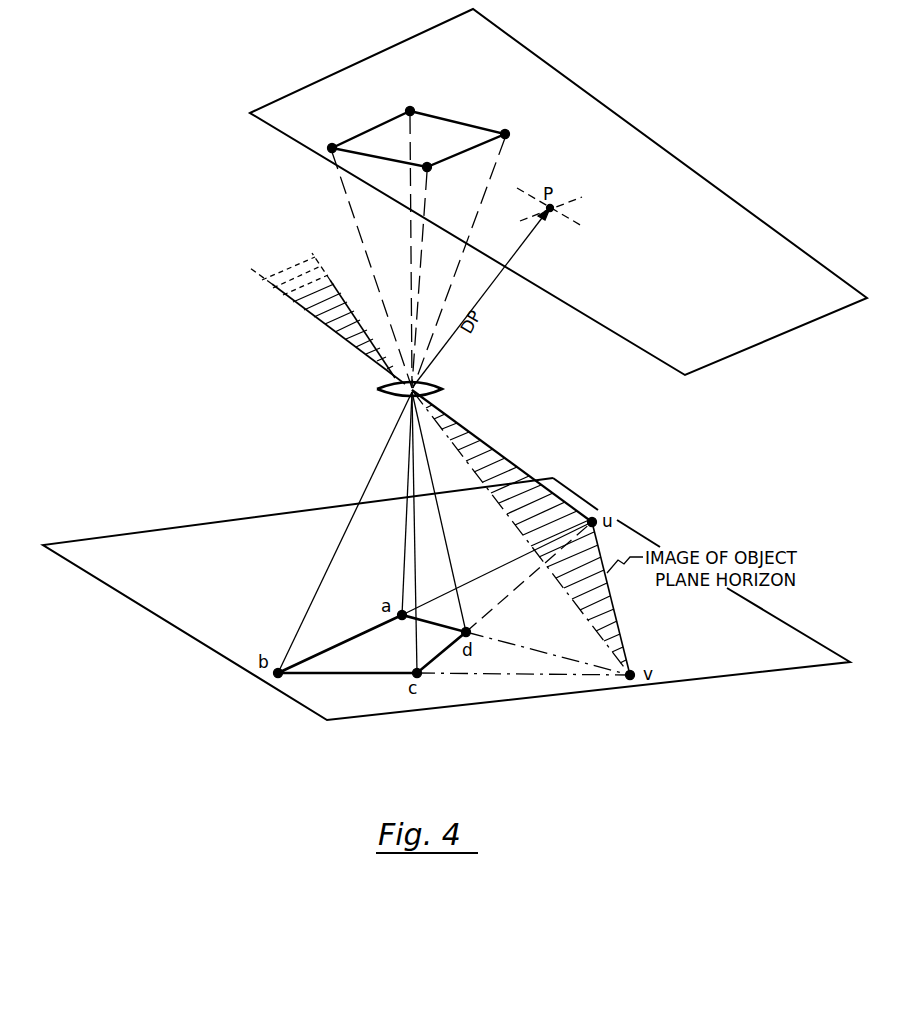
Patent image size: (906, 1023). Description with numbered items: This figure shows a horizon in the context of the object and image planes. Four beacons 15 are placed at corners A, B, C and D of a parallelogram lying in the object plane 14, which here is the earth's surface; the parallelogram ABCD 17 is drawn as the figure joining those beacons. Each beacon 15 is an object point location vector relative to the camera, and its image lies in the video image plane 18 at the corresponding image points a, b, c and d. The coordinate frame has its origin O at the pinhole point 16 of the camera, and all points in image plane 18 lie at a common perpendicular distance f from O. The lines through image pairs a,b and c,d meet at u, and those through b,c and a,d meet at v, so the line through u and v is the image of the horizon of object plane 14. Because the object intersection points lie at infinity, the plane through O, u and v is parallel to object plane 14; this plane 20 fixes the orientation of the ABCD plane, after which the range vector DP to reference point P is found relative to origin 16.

The object plane 14 is at (695, 331).
The beacons 15 is at (333, 147).
The pinhole point 16 is at (444, 383).
The object figure ABCD 17 is at (455, 121).
The video image plane 18 is at (725, 650).
The plane parallel to object plane through pinhole 20 is at (488, 453).